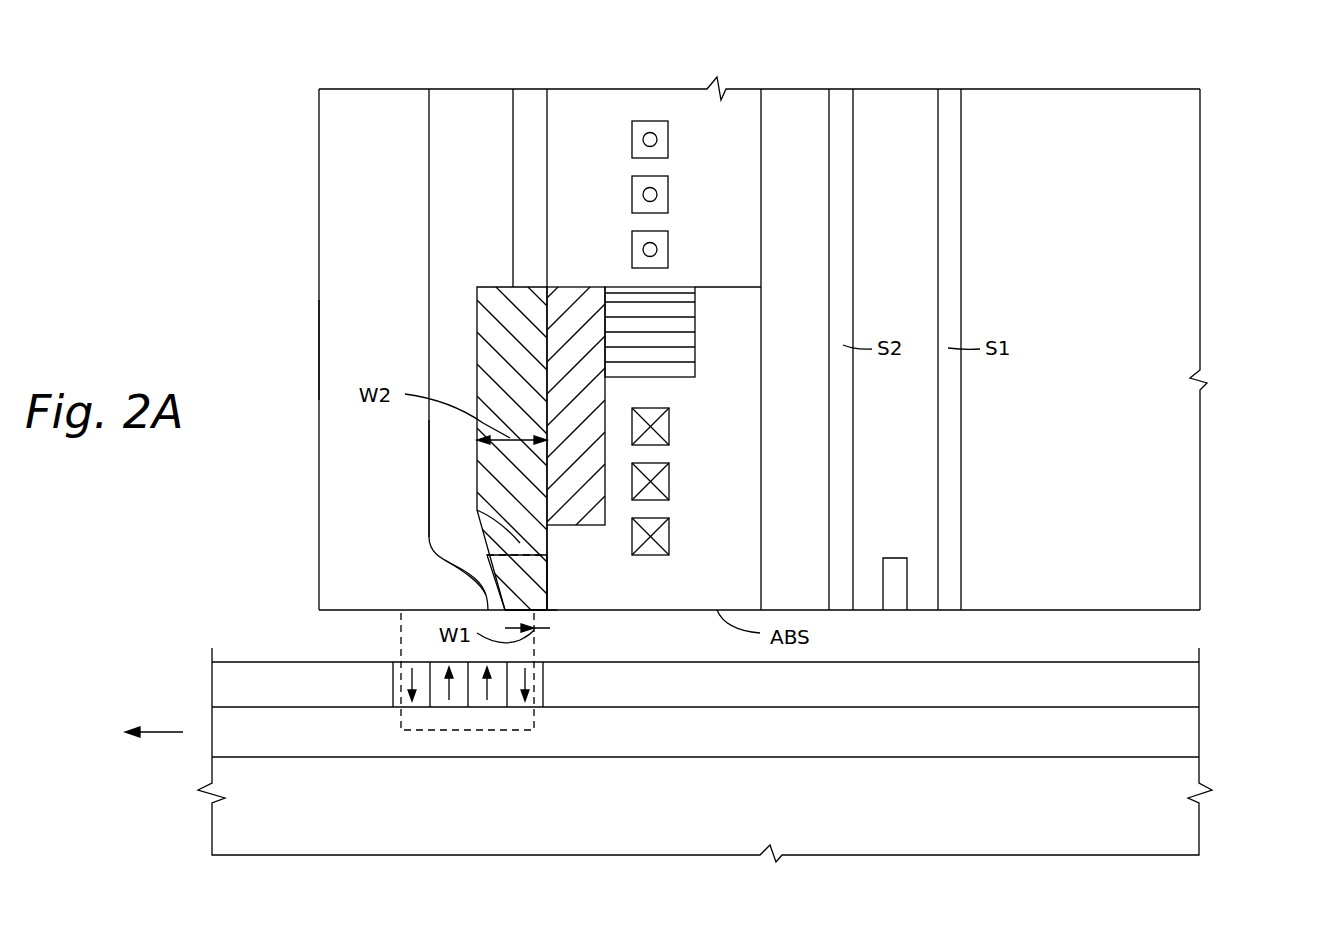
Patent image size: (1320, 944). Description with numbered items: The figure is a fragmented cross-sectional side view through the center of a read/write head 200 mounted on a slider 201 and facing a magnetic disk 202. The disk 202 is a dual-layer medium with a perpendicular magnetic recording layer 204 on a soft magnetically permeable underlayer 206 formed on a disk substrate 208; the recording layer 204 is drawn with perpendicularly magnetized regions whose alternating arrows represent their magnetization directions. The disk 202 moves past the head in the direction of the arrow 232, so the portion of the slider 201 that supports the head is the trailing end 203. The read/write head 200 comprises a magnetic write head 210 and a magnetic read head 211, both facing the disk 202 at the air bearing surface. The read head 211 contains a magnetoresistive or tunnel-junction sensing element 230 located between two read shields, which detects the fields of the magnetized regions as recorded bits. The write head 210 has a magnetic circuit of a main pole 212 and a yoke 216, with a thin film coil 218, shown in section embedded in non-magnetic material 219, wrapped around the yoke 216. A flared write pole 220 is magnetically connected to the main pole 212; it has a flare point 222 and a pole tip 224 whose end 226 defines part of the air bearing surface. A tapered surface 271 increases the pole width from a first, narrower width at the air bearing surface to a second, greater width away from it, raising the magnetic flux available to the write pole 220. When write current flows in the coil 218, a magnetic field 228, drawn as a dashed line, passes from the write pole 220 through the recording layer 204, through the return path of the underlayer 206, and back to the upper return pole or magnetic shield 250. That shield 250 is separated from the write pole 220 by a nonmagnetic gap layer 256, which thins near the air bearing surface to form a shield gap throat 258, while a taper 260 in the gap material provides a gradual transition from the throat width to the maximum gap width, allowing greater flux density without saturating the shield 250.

The read/write head 200 is at (158, 77).
The slider 201 is at (1188, 202).
The magnetic disk 202 is at (1232, 780).
The trailing end 203 is at (272, 312).
The recording layer 204 is at (1188, 687).
The underlayer 206 is at (1188, 734).
The disk substrate 208 is at (1188, 824).
The magnetic write head 210 is at (308, 72).
The magnetic read head 211 is at (970, 70).
The main pole 212 is at (566, 296).
The yoke 216 is at (688, 287).
The thin film coil 218 is at (680, 110).
The non-magnetic material 219 is at (560, 177).
The write pole 220 is at (490, 296).
The flare point 222 is at (477, 510).
The pole tip 224 is at (540, 573).
The end 226 is at (542, 611).
The magnetic field 228 is at (401, 633).
The MR sensing element 230 is at (890, 566).
The arrow 232 is at (165, 732).
The upper return pole 250 is at (326, 189).
The nonmagnetic gap layer 256 is at (438, 331).
The shield gap throat 258 is at (463, 557).
The taper 260 is at (430, 553).
The tapered surface 271 is at (487, 553).